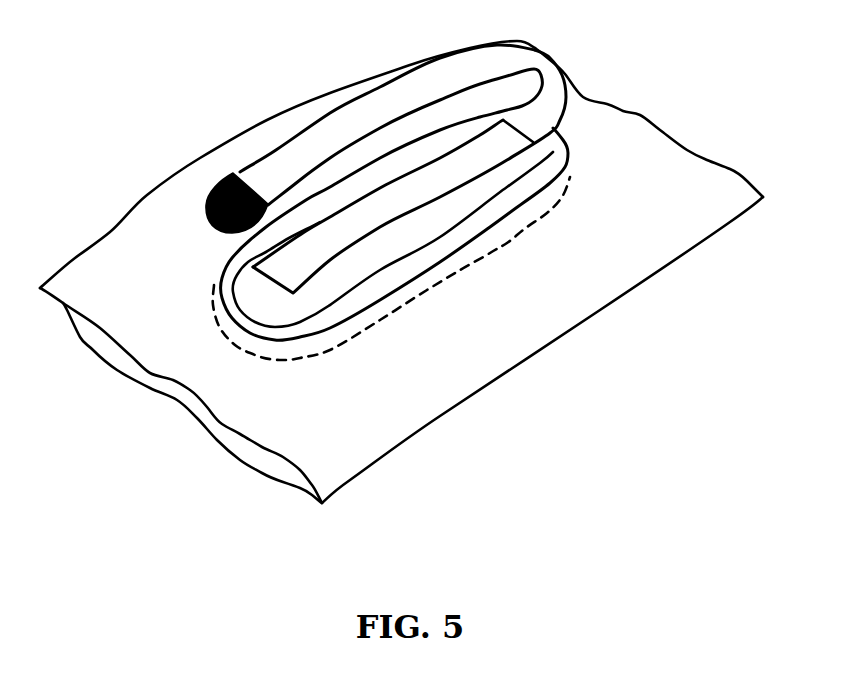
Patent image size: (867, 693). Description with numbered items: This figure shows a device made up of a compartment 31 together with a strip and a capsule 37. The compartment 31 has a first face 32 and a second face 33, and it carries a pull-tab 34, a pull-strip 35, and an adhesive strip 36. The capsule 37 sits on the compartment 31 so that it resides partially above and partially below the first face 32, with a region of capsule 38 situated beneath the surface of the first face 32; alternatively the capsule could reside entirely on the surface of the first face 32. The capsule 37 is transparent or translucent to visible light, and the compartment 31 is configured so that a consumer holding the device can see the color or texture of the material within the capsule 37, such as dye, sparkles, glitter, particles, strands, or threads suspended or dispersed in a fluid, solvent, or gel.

The compartment 31 is at (296, 239).
The first face 32 is at (267, 137).
The second face 33 is at (426, 260).
The pull-tab 34 is at (207, 230).
The pull-strip 35 is at (520, 212).
The adhesive strip 36 is at (288, 268).
The capsule 37 is at (433, 220).
The region of capsule 38 is at (443, 268).